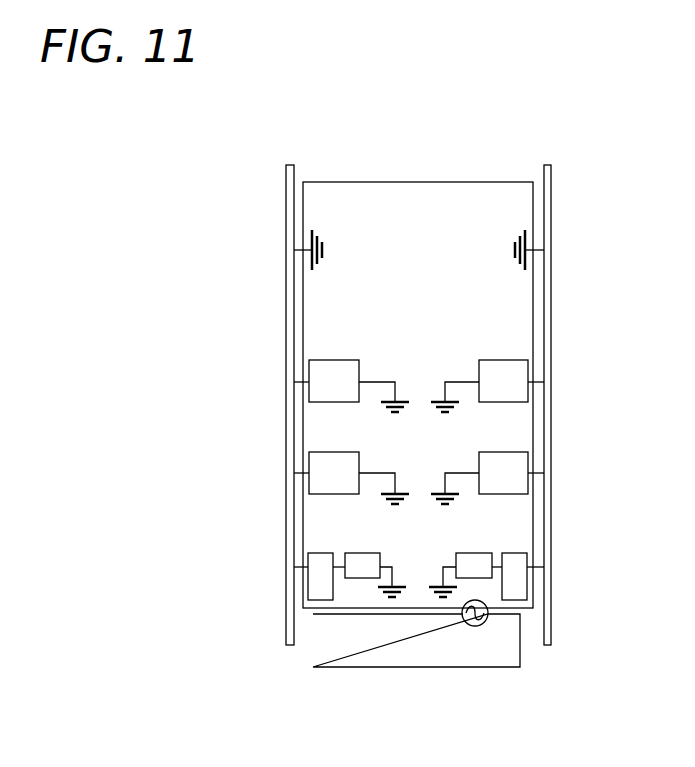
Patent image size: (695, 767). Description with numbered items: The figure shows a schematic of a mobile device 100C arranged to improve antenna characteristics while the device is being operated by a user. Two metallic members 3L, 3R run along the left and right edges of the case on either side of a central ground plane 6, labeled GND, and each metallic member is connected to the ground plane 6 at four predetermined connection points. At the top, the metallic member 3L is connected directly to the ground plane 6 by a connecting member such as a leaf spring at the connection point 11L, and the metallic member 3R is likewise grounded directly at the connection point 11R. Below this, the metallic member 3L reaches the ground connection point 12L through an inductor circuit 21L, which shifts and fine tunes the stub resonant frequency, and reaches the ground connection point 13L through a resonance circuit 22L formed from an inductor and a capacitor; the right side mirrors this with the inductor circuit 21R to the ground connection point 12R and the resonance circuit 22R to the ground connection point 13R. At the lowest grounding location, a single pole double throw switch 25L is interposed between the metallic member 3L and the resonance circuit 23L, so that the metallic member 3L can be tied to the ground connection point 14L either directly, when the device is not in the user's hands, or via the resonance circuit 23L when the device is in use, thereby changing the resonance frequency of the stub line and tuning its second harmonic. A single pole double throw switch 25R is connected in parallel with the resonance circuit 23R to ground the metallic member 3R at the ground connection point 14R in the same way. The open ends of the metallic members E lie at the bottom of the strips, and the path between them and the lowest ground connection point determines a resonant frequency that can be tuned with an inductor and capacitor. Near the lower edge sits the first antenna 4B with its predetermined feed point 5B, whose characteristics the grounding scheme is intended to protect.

The mobile device 100C is at (489, 151).
The ground plane 6 is at (375, 195).
The metallic member 3L is at (286, 216).
The metallic member 3R is at (551, 216).
The connection point 11L is at (311, 250).
The connection point 11R is at (526, 250).
The inductor circuit 21L is at (332, 360).
The inductor circuit 21R is at (508, 360).
The ground connection point 12L is at (378, 405).
The ground connection point 12R is at (456, 405).
The resonance circuit 22L is at (332, 452).
The resonance circuit 22R is at (508, 452).
The ground connection point 13L is at (378, 497).
The ground connection point 13R is at (456, 497).
The resonance circuit 23L is at (352, 553).
The resonance circuit 23R is at (482, 553).
The single pole double throw switch 25L is at (308, 590).
The single pole double throw switch 25R is at (527, 590).
The ground connection point 14L is at (378, 588).
The ground connection point 14R is at (464, 588).
The first antenna 4B is at (395, 667).
The feed point 5B is at (477, 626).
The open ends of the metallic members E is at (290, 646).